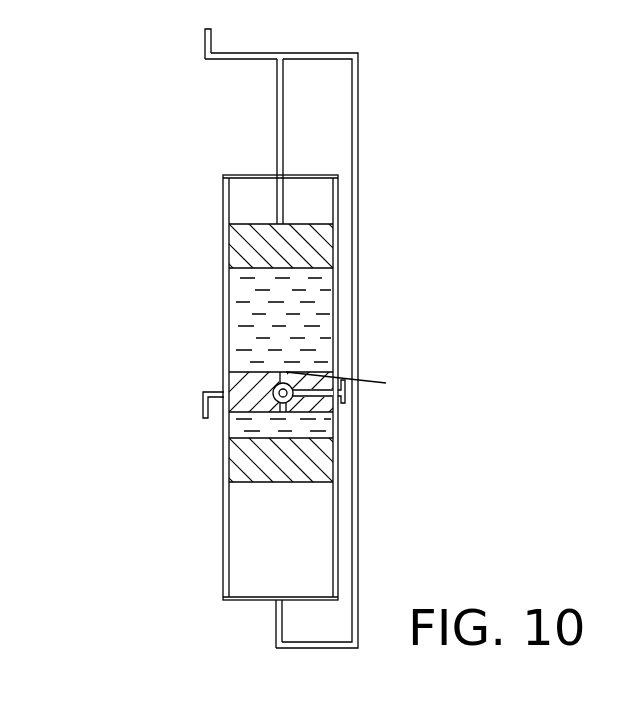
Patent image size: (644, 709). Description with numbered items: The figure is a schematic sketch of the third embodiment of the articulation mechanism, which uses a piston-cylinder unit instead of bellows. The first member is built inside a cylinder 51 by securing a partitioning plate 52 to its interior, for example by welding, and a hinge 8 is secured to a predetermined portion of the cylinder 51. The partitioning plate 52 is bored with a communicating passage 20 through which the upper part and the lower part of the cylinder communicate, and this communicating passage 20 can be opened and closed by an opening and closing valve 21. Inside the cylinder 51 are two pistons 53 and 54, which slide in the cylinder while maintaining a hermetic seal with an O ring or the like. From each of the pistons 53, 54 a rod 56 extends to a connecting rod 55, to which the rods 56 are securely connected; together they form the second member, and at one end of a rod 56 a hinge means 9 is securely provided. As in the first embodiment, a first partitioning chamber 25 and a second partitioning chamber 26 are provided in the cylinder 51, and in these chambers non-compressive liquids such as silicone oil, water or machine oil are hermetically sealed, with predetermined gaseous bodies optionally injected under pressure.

The hinge means 9 is at (206, 46).
The rod 56 is at (278, 118).
The connecting rod 55 is at (358, 148).
The piston 53 is at (236, 242).
The first partitioning chamber 25 is at (328, 292).
The cylinder 51 is at (246, 308).
The partitioning plate 52 is at (243, 374).
The communicating passage 20 is at (287, 372).
The opening and closing valve 21 is at (343, 381).
The hinge 8 is at (203, 404).
The second partitioning chamber 26 is at (330, 421).
The piston 54 is at (250, 478).